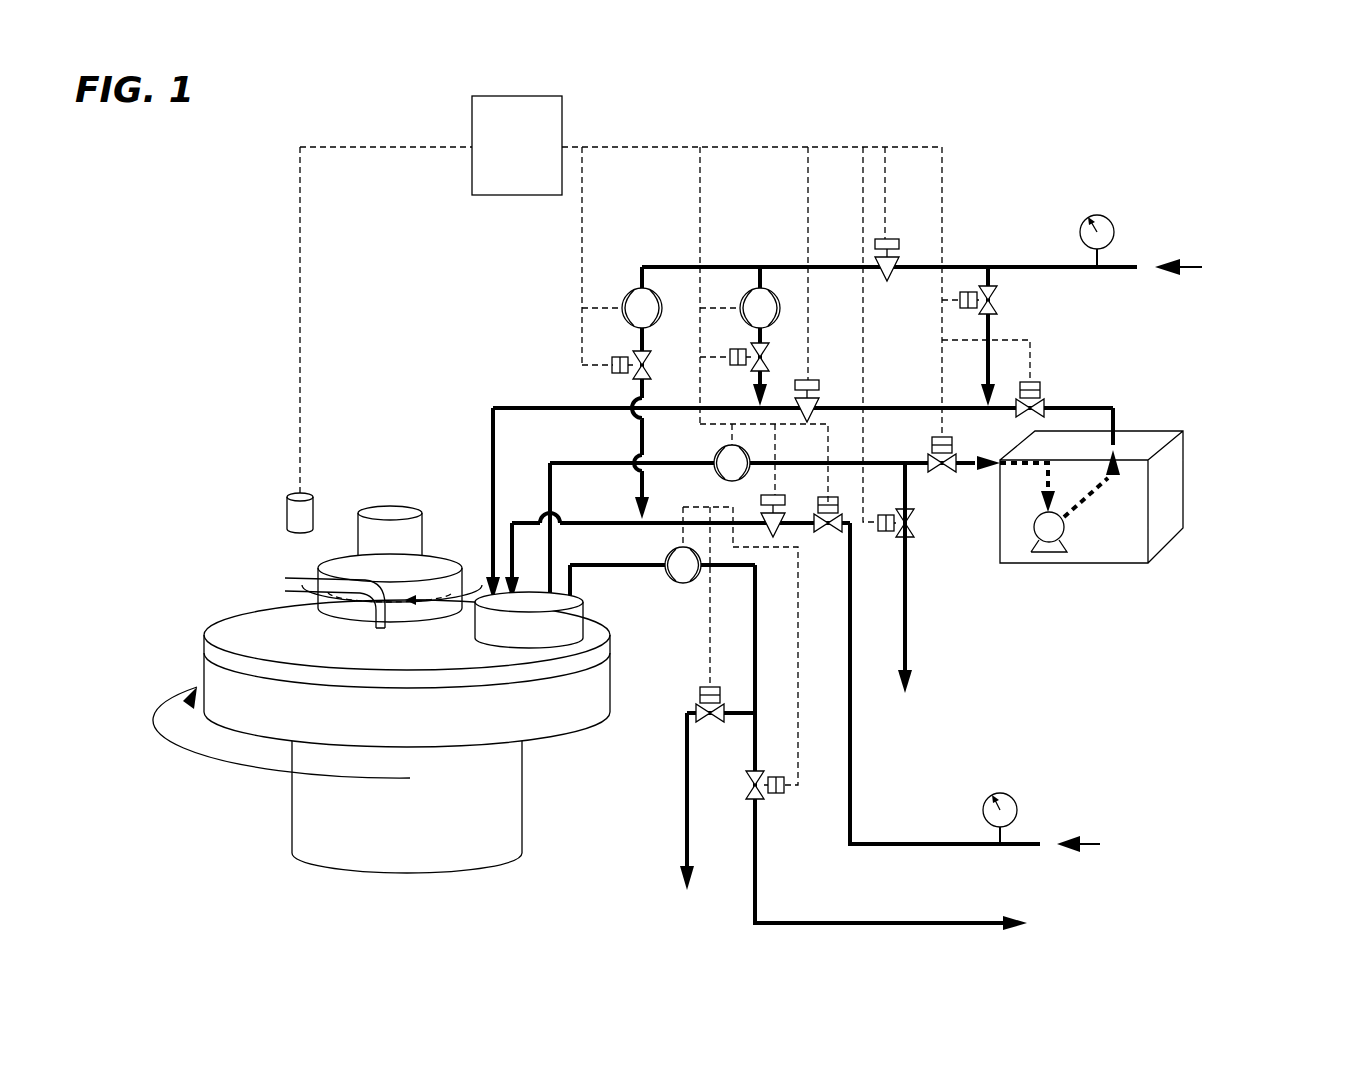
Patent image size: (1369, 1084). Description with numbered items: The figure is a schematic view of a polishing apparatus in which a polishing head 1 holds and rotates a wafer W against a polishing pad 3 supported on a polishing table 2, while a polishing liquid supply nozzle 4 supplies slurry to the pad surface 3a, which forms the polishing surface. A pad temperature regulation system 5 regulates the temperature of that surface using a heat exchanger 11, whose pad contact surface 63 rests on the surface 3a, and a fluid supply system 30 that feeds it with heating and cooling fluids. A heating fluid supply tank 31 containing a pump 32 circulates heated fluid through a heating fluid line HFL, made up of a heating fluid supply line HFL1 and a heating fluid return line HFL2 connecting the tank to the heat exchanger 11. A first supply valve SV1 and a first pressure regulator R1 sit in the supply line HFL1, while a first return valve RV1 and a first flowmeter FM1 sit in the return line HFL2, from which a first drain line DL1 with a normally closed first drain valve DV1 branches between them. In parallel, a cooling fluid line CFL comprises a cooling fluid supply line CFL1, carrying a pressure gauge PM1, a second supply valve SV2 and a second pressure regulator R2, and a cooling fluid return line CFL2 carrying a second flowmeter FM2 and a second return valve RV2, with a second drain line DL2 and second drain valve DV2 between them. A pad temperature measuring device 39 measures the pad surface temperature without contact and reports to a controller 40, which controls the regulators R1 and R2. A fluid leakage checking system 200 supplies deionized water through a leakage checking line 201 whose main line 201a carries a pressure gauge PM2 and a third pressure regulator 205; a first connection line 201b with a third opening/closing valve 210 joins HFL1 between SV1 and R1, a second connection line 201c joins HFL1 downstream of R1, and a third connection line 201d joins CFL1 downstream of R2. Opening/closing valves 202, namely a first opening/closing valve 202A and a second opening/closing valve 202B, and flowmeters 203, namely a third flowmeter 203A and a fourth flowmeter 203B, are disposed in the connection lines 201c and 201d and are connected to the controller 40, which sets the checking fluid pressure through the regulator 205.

The polishing head 1 is at (352, 560).
The polishing table 2 is at (556, 714).
The polishing pad 3 is at (224, 622).
The surface of the polishing pad 3a is at (276, 625).
The polishing liquid supply nozzle 4 is at (378, 626).
The pad temperature regulation system 5 is at (493, 386).
The heat exchanger 11 is at (590, 603).
The fluid supply system 30 is at (1136, 544).
The heating fluid supply tank 31 is at (1183, 478).
The pump 32 is at (1049, 558).
The pad temperature measuring device 39 is at (288, 508).
The controller 40 is at (472, 118).
The pad contact surface 63 is at (550, 630).
The fluid leakage checking system 200 is at (920, 299).
The leakage checking line 201 is at (1048, 265).
The main line 201a is at (1120, 269).
The first connection line 201b is at (989, 326).
The second connection line 201c is at (764, 282).
The third connection line 201d is at (638, 285).
The on-off valves 202 is at (599, 358).
The first opening/closing valve 202A is at (740, 366).
The second opening/closing valve 202B is at (613, 374).
The flow meters 203 is at (622, 268).
The third flowmeter 203A is at (743, 296).
The fourth flowmeter 203B is at (658, 318).
The third pressure regulator 205 is at (890, 240).
The third opening/closing valve 210 is at (1000, 291).
The wafer W is at (432, 597).
The first flowmeter FM1 is at (718, 450).
The second flowmeter FM2 is at (666, 558).
The first pressure regulator R1 is at (816, 380).
The second pressure regulator R2 is at (773, 540).
The first supply valve SV1 is at (1083, 387).
The second supply valve SV2 is at (832, 533).
The first return valve RV1 is at (953, 442).
The second return valve RV2 is at (782, 797).
The first drain valve DV1 is at (880, 538).
The second drain valve DV2 is at (698, 695).
The first drain line DL1 is at (908, 612).
The second drain line DL2 is at (684, 852).
The heating fluid line HFL is at (834, 485).
The heating fluid supply line HFL1 is at (1118, 418).
The heating fluid return line HFL2 is at (965, 478).
The cooling fluid line CFL is at (910, 712).
The cooling fluid supply line CFL1 is at (853, 768).
The cooling fluid return line CFL2 is at (910, 920).
The pressure gauge PM1 is at (1038, 786).
The pressure gauge PM2 is at (1112, 222).